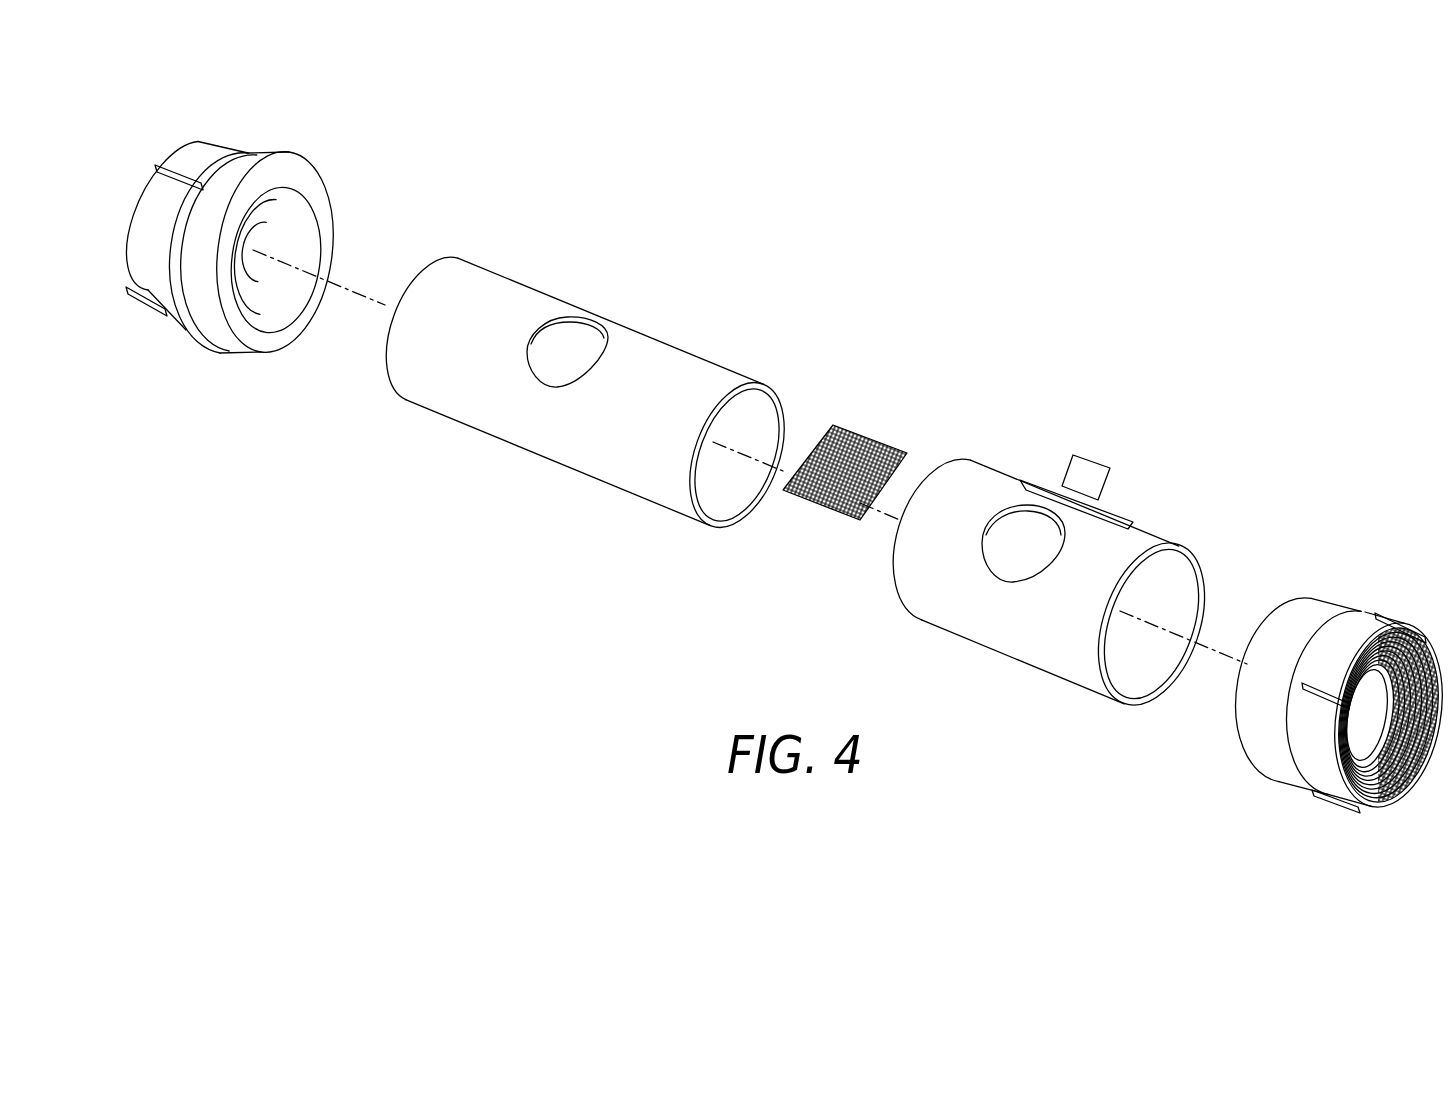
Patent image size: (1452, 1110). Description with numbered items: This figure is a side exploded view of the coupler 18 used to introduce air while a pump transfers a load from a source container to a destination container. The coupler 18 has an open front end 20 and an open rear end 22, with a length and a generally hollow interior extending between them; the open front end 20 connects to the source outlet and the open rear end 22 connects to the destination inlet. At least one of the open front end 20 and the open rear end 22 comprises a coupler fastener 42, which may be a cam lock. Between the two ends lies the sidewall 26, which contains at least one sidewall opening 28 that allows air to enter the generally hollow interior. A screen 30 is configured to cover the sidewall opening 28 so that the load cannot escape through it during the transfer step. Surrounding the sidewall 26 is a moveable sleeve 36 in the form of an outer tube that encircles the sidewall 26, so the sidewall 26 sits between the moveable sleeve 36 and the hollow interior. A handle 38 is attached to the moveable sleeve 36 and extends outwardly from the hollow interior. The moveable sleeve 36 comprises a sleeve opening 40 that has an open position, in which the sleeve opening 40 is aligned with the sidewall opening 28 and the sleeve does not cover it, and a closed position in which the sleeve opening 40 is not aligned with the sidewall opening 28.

The coupler 18 is at (1022, 278).
The open front end 20 is at (280, 172).
The open rear end 22 is at (1307, 607).
The sidewall 26 is at (526, 418).
The sidewall opening 28 is at (570, 348).
The screen 30 is at (853, 430).
The moveable sleeve 36 is at (1132, 542).
The handle 38 is at (1094, 458).
The sleeve opening 40 is at (1013, 552).
The coupler fastener 42 is at (789, 463).